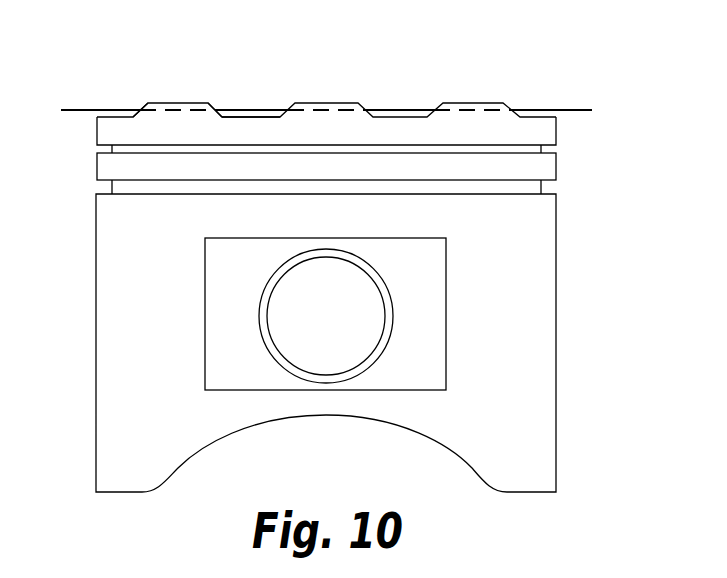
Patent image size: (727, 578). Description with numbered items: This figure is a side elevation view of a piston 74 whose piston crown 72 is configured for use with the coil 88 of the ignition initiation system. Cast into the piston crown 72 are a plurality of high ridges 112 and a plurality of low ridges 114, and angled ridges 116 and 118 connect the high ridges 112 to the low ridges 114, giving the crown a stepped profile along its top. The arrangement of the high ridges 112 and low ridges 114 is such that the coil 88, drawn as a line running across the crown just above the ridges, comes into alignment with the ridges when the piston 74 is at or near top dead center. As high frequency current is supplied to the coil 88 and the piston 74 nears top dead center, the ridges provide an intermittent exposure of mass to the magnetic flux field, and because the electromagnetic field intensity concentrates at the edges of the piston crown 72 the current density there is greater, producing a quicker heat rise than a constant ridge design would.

The piston crown 72 is at (545, 130).
The piston 74 is at (519, 320).
The coil 88 is at (82, 113).
The high ridges 112 is at (173, 102).
The low ridges 114 is at (253, 117).
The angled ridge 116 is at (140, 106).
The angled ridge 118 is at (218, 108).